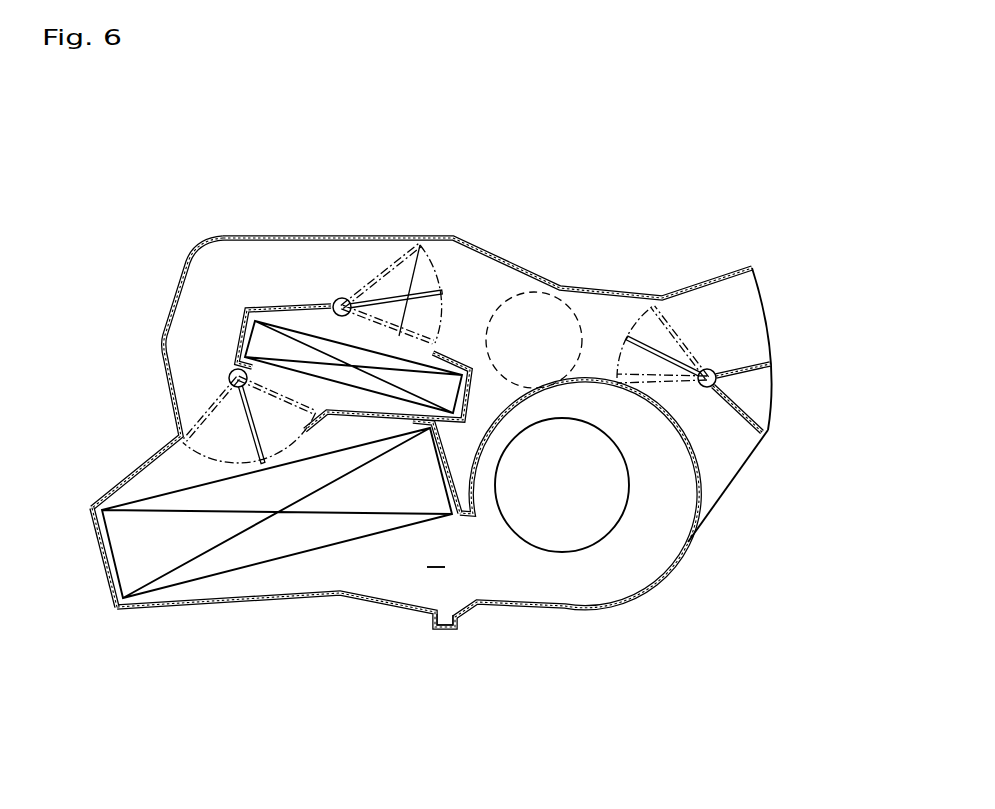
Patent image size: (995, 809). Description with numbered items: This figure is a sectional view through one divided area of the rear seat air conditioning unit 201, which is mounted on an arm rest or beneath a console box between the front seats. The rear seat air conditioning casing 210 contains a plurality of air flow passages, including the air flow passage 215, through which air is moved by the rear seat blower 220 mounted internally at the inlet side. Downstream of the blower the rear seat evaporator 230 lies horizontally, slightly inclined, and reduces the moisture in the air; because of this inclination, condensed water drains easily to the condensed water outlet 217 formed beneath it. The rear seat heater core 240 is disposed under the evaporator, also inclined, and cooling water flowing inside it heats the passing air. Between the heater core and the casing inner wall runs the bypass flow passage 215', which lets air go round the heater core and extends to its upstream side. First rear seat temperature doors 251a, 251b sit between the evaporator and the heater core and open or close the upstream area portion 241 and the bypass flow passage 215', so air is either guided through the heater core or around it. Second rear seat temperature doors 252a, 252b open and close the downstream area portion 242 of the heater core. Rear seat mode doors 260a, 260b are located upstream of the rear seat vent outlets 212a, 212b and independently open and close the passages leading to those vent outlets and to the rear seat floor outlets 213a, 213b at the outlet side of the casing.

The rear seat air conditioning unit 201 is at (150, 140).
The rear seat air conditioning casing 210 is at (688, 541).
The rear seat vent outlet 212a is at (720, 326).
The rear seat vent outlet 212b is at (784, 339).
The rear seat floor outlet 213a is at (723, 512).
The rear seat floor outlet 213b is at (770, 488).
The air flow passage 215 is at (436, 553).
The bypass flow passage 215' is at (155, 284).
The condensed water outlet 217 is at (442, 628).
The rear seat blower 220 is at (595, 522).
The rear seat evaporator 230 is at (244, 553).
The rear seat heater core 240 is at (350, 378).
The upstream area portion 241 is at (289, 380).
The downstream area portion 242 is at (399, 336).
The first rear seat temperature door 251a is at (252, 424).
The first rear seat temperature door 251b is at (200, 405).
The second rear seat temperature door 252a is at (393, 293).
The second rear seat temperature door 252b is at (389, 258).
The rear seat mode door 260a is at (664, 348).
The rear seat mode door 260b is at (671, 279).